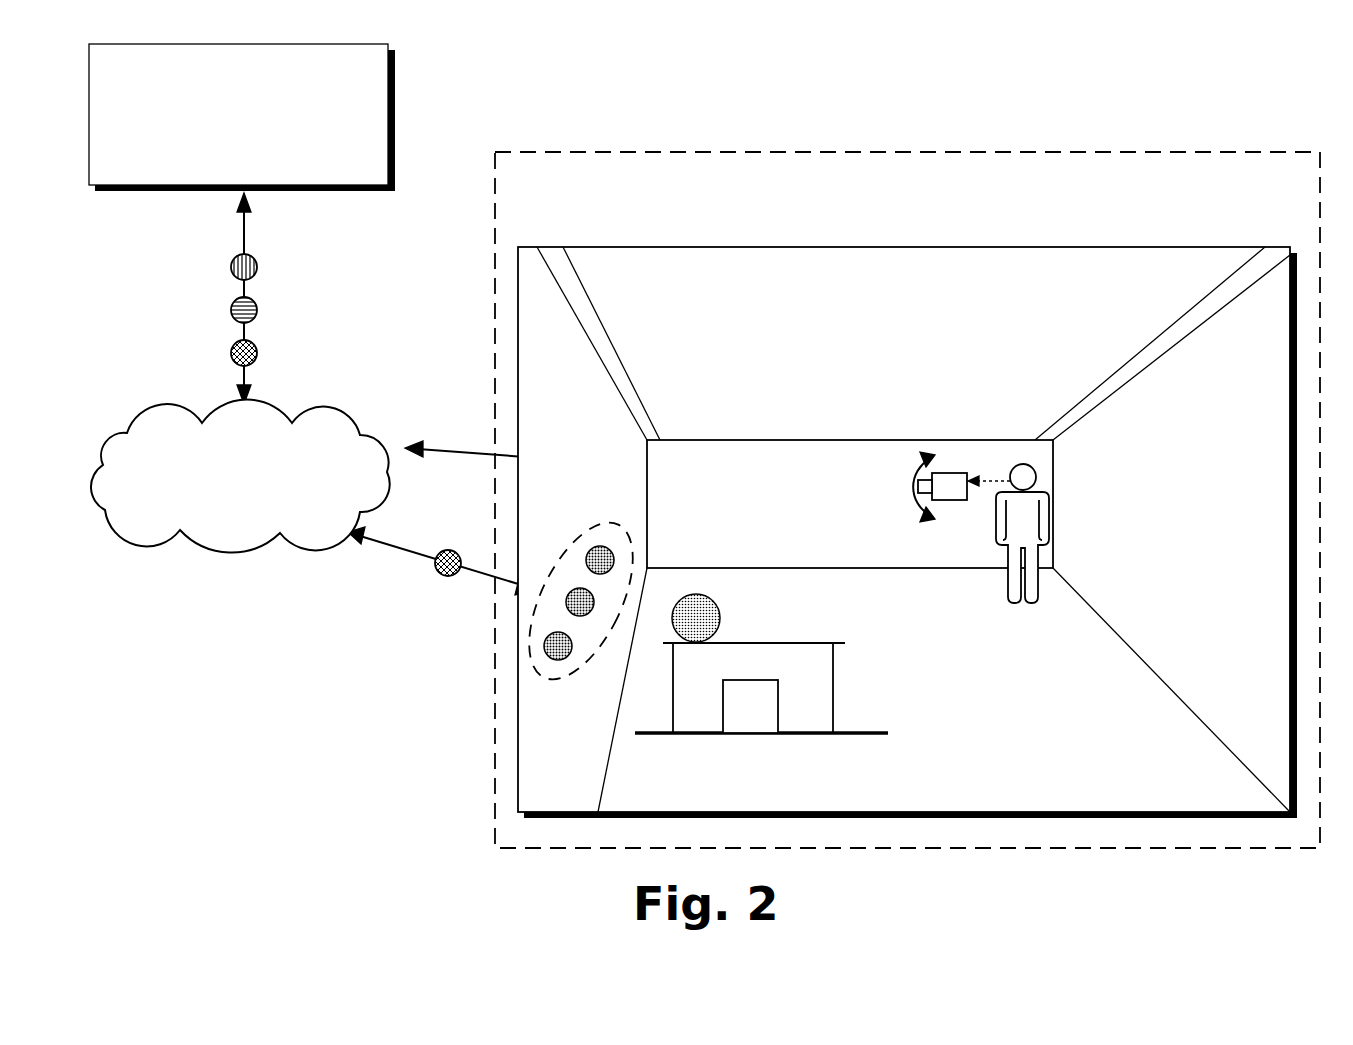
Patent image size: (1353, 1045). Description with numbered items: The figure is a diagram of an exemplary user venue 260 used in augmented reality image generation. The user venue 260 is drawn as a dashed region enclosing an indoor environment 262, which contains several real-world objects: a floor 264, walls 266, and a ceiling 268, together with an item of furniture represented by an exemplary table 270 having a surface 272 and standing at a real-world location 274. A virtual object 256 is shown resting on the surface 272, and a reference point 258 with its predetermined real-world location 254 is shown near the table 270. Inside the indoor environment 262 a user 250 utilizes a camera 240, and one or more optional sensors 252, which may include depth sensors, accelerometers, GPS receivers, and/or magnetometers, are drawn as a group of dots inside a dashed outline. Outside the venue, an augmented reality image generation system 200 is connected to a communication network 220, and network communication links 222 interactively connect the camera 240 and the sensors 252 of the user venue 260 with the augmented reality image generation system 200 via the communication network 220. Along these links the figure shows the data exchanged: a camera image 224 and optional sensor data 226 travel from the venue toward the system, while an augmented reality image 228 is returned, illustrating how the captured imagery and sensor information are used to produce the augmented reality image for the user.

The augmented reality image generation system 200 is at (392, 98).
The communication network 220 is at (240, 476).
The network communication links 222 is at (240, 226).
The camera image 224 is at (230, 310).
The sensor data 226 is at (258, 352).
The augmented reality image 228 is at (258, 264).
The camera 240 is at (948, 503).
The user 250 is at (1020, 606).
The sensors 252 is at (590, 530).
The predetermined real-world location 254 is at (748, 736).
The virtual object 256 is at (718, 601).
The reference point 258 is at (750, 706).
The user venue 260 is at (1000, 150).
The indoor environment 262 is at (1208, 233).
The floor 264 is at (944, 690).
The walls 266 is at (870, 480).
The ceiling 268 is at (913, 343).
The table 270 is at (794, 686).
The surface 272 is at (833, 641).
The real-world location 274 is at (835, 736).